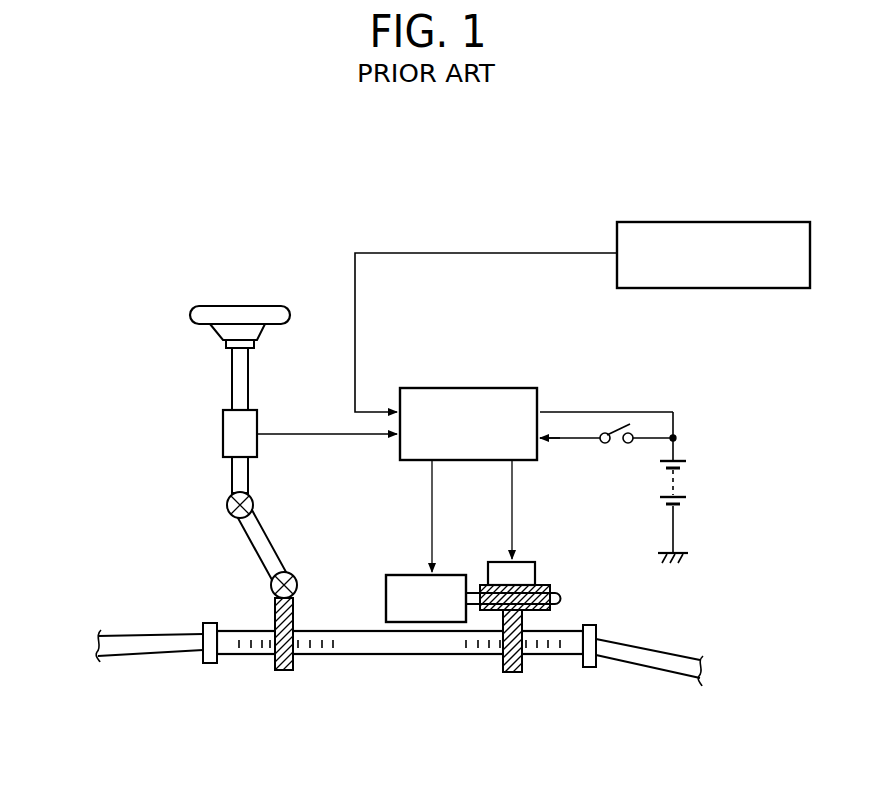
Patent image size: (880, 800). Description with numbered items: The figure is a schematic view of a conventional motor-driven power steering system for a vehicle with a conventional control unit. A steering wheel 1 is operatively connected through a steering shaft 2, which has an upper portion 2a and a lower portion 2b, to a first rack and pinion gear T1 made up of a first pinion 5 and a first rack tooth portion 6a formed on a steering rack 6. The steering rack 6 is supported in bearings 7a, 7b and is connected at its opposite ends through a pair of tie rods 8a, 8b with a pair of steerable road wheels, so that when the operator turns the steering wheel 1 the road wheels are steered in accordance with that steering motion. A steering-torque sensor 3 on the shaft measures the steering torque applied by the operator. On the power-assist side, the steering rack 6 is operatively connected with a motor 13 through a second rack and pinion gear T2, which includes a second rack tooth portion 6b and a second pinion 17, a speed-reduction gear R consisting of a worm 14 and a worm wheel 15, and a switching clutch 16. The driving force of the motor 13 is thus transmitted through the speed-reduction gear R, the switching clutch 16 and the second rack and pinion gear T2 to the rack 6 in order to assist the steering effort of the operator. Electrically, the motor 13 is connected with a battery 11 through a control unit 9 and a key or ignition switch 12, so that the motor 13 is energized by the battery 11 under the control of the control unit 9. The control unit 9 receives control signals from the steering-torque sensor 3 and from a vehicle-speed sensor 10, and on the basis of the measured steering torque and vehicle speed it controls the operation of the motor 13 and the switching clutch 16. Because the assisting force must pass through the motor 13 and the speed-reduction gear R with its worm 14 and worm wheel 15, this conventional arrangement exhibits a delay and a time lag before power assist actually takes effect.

The steering wheel 1 is at (190, 312).
The steering shaft 2 is at (241, 473).
The upper portion 2a is at (241, 372).
The lower portion 2b is at (262, 538).
The steering-torque sensor 3 is at (250, 445).
The first pinion 5 is at (283, 672).
The steering rack 6 is at (400, 672).
The first rack tooth portion 6a is at (321, 655).
The second rack tooth portion 6b is at (472, 655).
The bearing 7a is at (210, 664).
The bearing 7b is at (590, 668).
The tie rod 8a is at (137, 653).
The tie rod 8b is at (652, 668).
The control unit 9 is at (466, 388).
The vehicle-speed sensor 10 is at (708, 222).
The battery 11 is at (680, 478).
The key or ignition switch 12 is at (617, 445).
The motor 13 is at (398, 575).
The worm 14 is at (555, 600).
The worm wheel 15 is at (545, 585).
The switching clutch 16 is at (530, 565).
The second pinion 17 is at (514, 674).
The speed-reduction gear R is at (555, 576).
The first rack and pinion gear T1 is at (300, 616).
The second rack and pinion gear T2 is at (552, 620).